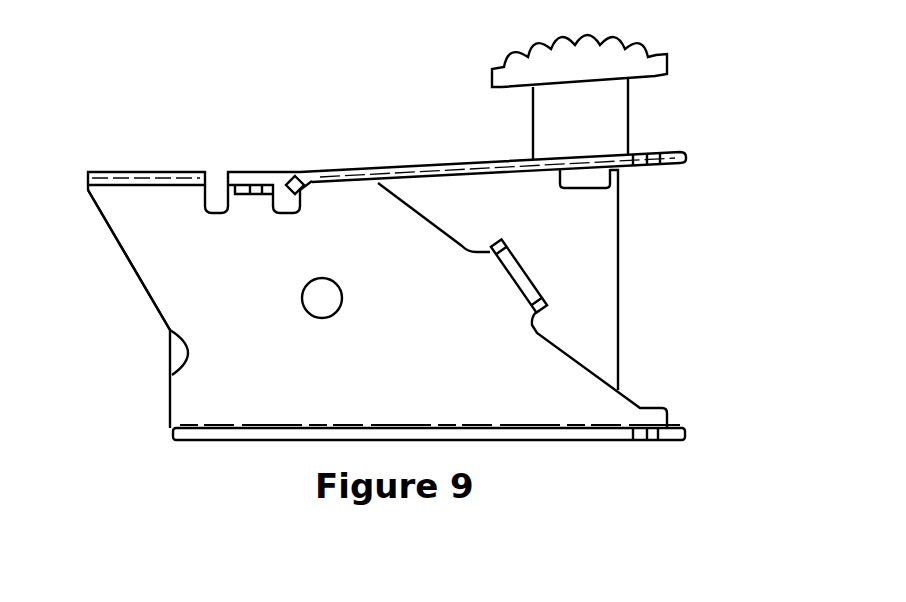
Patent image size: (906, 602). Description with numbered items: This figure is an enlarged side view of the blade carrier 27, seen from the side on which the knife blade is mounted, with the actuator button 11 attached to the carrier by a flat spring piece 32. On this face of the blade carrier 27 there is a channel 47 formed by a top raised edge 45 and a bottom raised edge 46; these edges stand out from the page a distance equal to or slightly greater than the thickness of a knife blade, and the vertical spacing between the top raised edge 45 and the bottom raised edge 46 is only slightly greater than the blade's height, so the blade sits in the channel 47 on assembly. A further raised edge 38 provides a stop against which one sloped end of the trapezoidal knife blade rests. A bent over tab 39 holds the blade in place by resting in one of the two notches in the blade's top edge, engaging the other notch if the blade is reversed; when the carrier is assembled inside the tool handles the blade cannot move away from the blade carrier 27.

The actuator button 11 is at (501, 51).
The blade carrier 27 is at (440, 363).
The flat spring piece 32 is at (461, 155).
The raised edge 38 is at (533, 262).
The bent over tab 39 is at (288, 170).
The top raised edge 45 is at (155, 160).
The bottom raised edge 46 is at (199, 418).
The channel 47 is at (158, 270).